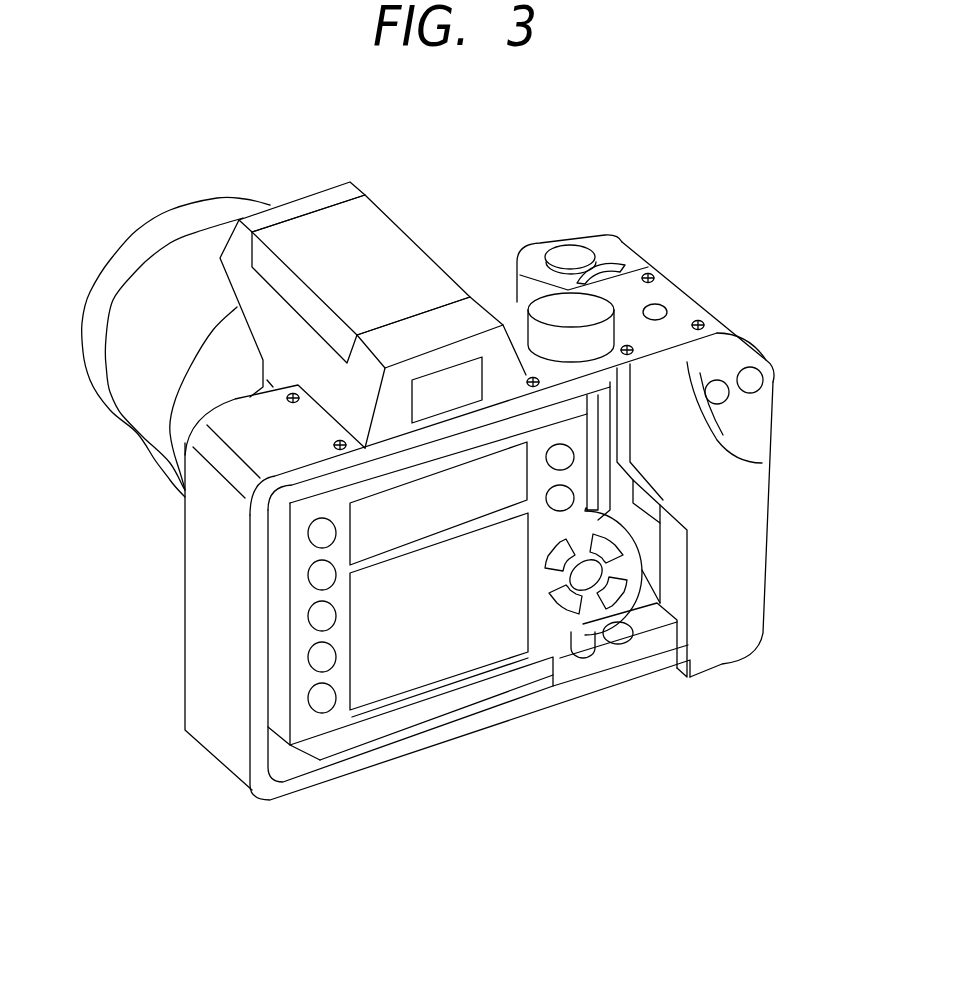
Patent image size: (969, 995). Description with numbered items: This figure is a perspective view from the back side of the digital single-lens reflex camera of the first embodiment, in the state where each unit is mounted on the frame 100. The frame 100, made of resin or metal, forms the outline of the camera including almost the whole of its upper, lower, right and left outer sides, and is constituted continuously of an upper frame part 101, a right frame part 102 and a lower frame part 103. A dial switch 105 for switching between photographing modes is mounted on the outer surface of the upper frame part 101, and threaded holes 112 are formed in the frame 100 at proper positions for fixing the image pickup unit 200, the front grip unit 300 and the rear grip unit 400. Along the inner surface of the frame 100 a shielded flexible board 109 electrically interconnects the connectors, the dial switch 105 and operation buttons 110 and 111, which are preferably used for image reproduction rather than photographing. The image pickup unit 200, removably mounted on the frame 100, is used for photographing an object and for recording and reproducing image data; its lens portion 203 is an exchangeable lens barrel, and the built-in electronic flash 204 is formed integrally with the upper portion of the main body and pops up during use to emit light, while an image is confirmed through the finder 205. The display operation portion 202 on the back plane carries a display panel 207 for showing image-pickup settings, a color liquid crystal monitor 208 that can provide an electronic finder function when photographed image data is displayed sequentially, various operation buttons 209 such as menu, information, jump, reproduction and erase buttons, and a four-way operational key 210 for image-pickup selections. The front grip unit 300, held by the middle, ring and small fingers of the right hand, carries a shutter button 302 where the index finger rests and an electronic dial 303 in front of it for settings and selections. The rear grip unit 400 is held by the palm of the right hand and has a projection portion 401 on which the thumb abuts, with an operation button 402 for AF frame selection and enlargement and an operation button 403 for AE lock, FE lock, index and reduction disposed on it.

The frame 100 is at (478, 507).
The upper frame part 101 is at (657, 311).
The right frame part 102 is at (198, 604).
The lower frame part 103 is at (492, 728).
The dial switch 105 is at (555, 315).
The shielded flexible board 109 is at (647, 623).
The operation button 110 is at (597, 663).
The operation button 111 is at (620, 642).
The threaded holes 112 is at (334, 450).
The image pickup unit 200 is at (382, 278).
The display operation portion 202 is at (327, 727).
The lens portion 203 is at (172, 262).
The built-in electronic flash 204 is at (368, 213).
The finder 205 is at (430, 383).
The display panel 207 is at (430, 517).
The color liquid crystal monitor 208 is at (408, 686).
The operation buttons 209 is at (310, 541).
The four-way operational key 210 is at (576, 618).
The front grip unit 300 is at (619, 226).
The shutter button 302 is at (570, 250).
The electronic dial 303 is at (612, 275).
The rear grip unit 400 is at (772, 502).
The projection portion 401 is at (763, 443).
The operation button 402 is at (753, 385).
The operation button 403 is at (718, 380).